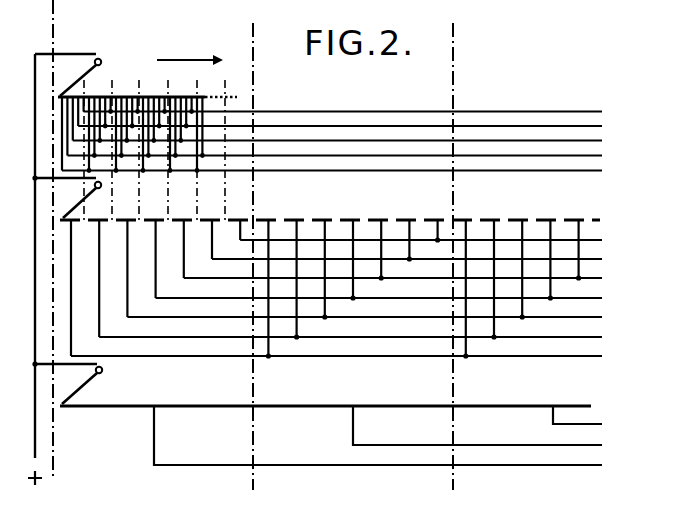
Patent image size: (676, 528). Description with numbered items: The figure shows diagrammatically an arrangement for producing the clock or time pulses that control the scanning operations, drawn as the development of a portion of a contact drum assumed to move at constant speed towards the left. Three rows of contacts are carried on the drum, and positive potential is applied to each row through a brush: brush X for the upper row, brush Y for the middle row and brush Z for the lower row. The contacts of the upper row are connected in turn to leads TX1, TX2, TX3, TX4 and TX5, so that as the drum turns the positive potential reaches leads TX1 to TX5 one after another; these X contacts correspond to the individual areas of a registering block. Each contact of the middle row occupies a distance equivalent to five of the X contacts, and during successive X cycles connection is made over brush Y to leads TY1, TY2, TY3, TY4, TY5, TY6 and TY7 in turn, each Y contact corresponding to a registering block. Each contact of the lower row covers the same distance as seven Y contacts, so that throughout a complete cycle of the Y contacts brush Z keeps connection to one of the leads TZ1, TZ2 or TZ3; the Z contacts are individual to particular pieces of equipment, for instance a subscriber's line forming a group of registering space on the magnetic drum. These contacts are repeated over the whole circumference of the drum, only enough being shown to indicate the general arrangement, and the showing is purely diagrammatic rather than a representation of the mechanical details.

The brush X is at (136, 75).
The brush Y is at (316, 197).
The brush Z is at (311, 383).
The lead TX1 is at (350, 139).
The lead TX2 is at (352, 131).
The lead TX3 is at (356, 124).
The lead TX4 is at (358, 117).
The lead TX5 is at (361, 109).
The lead TY1 is at (354, 293).
The lead TY2 is at (368, 283).
The lead TY3 is at (382, 273).
The lead TY4 is at (397, 264).
The lead TY5 is at (411, 254).
The lead TY6 is at (425, 244).
The lead TY7 is at (439, 235).
The lead TZ1 is at (396, 440).
The lead TZ2 is at (496, 430).
The lead TZ3 is at (596, 420).